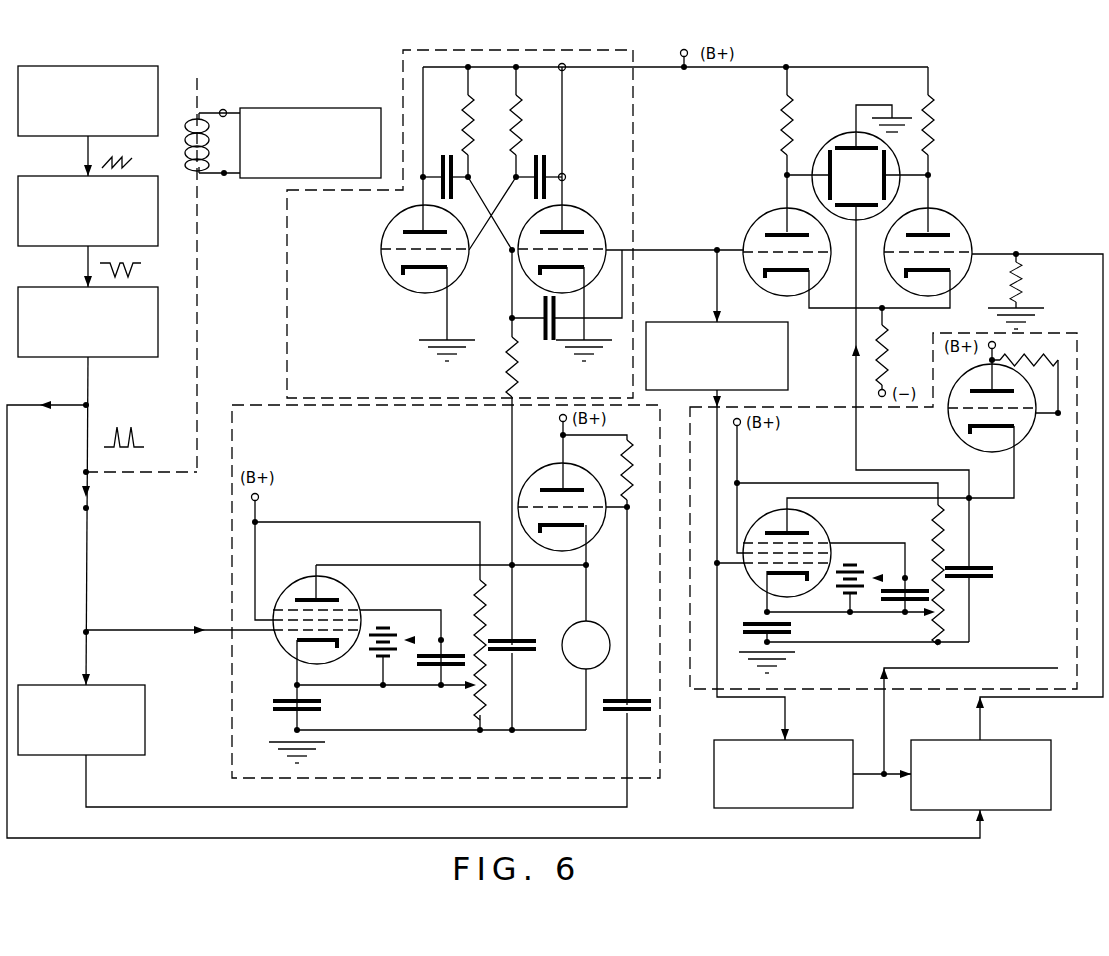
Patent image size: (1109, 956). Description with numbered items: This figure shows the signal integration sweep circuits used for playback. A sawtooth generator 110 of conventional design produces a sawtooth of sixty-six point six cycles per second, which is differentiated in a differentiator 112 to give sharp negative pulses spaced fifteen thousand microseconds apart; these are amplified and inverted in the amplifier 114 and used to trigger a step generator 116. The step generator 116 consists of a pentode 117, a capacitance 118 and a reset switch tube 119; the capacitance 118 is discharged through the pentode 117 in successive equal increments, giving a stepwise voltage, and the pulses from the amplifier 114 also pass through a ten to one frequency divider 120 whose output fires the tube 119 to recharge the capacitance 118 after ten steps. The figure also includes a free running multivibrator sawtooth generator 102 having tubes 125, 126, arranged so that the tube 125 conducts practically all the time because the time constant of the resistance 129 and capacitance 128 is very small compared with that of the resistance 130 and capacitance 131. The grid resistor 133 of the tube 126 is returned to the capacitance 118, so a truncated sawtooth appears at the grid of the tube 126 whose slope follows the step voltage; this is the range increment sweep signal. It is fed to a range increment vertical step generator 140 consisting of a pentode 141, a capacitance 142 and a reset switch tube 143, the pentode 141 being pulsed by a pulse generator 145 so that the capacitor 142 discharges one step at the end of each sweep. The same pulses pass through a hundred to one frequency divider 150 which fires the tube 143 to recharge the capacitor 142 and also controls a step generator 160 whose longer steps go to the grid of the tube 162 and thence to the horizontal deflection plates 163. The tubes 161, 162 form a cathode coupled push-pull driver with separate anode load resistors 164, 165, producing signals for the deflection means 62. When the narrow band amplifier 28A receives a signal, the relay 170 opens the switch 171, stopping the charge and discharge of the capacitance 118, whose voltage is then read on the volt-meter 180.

The sawtooth generator 110 is at (62, 67).
The differentiator 112 is at (62, 177).
The amplifier 114 is at (62, 288).
The narrow band amplifier 28A is at (295, 109).
The relay 170 is at (224, 173).
The range increment sweep generator 102 is at (368, 366).
The resistance 130 is at (473, 122).
The resistance 129 is at (520, 122).
The capacitance 131 is at (445, 156).
The capacitance 128 is at (540, 156).
The tube 125 is at (397, 216).
The tube 126 is at (598, 228).
The grid resistor 133 is at (510, 352).
The pulse generator 145 is at (697, 320).
The load resistor 164 is at (782, 128).
The load resistor 165 is at (932, 128).
The deflection means 62 is at (834, 142).
The horizontal deflection plates 163 is at (881, 193).
The tube 161 is at (758, 230).
The tube 162 is at (958, 233).
The range increment vertical step generator 140 is at (1040, 524).
The reset switch tube 143 is at (957, 420).
The pentode 141 is at (823, 536).
The capacitance 142 is at (998, 570).
The frequency divider 150 is at (761, 741).
The step generator 160 is at (958, 741).
The step generator 116 is at (322, 442).
The reset switch tube 119 is at (540, 477).
The pentode 117 is at (352, 600).
The capacitance 118 is at (540, 650).
The volt-meter 180 is at (566, 660).
The frequency divider 120 is at (62, 686).
The switch 171 is at (86, 488).